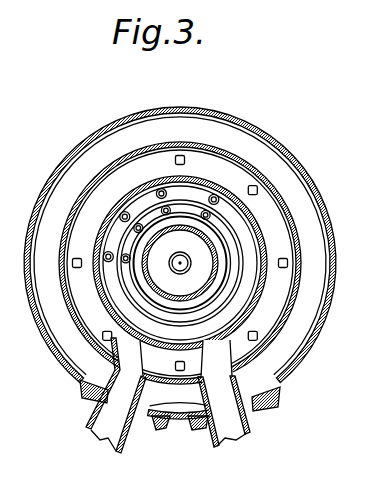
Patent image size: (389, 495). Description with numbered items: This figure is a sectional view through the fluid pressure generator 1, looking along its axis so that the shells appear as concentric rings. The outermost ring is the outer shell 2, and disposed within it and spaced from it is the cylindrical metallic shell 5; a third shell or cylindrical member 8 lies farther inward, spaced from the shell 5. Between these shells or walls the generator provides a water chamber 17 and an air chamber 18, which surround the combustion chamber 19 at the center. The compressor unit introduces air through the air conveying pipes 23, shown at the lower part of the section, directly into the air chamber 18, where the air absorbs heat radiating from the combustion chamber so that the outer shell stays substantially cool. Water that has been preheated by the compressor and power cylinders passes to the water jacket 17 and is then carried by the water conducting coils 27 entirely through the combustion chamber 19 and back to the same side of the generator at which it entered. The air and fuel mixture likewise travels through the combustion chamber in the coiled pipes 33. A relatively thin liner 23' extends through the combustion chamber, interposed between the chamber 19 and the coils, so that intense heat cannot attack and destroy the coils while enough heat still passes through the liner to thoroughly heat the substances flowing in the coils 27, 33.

The fluid pressure generator 1 is at (189, 269).
The outer shell 2 is at (298, 170).
The cylindrical metallic shell 5 is at (291, 217).
The third shell or cylindrical member 8 is at (268, 248).
The water chamber 17 is at (313, 288).
The air chamber 18 is at (273, 302).
The combustion chamber 19 is at (100, 284).
The air conveying pipes 23 is at (180, 404).
The liner 23' is at (189, 184).
The water conducting coils 27 is at (217, 198).
The coiled pipes 33 is at (152, 214).